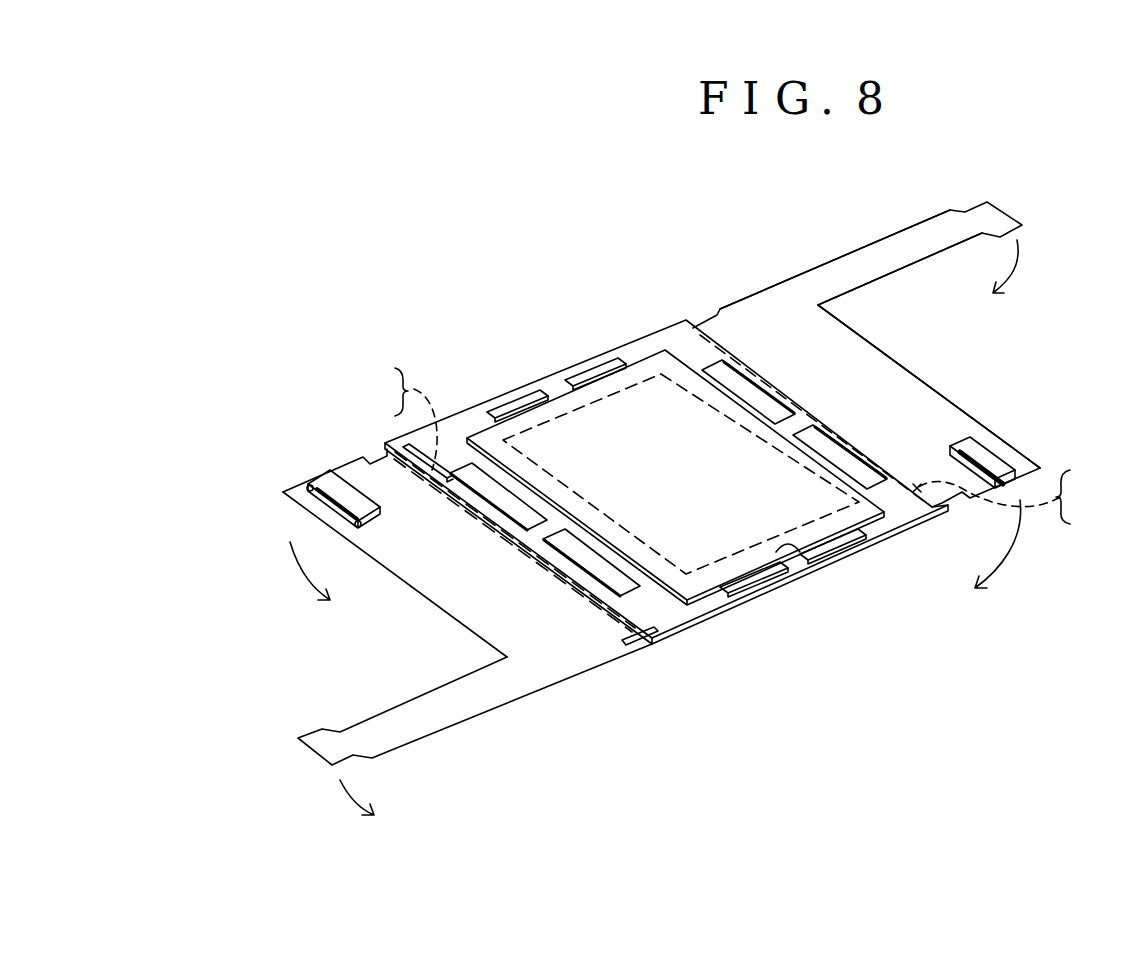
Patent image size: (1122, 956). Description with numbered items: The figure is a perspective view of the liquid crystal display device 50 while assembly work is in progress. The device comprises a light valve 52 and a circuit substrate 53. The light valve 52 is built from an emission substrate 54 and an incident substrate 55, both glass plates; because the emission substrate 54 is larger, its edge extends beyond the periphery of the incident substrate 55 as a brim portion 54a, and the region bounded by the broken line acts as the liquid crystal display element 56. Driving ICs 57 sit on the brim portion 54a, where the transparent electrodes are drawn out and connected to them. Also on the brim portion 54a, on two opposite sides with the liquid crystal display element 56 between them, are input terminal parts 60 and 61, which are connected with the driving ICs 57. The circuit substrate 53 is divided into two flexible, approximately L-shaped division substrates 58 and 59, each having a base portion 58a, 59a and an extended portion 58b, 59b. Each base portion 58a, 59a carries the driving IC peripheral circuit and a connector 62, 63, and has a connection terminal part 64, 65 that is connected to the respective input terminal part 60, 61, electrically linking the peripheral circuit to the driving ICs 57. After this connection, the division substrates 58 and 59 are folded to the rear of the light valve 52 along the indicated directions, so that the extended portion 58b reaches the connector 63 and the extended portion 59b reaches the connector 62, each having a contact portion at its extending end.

The liquid crystal display device 50 is at (268, 247).
The light valve 52 is at (661, 326).
The circuit substrate 53 is at (596, 476).
The emission substrate 54 is at (901, 524).
The brim portion 54a is at (460, 424).
The incident substrate 55 is at (800, 550).
The liquid crystal display element 56 is at (652, 408).
The driving ICs 57 is at (578, 372).
The division substrate 58 is at (868, 339).
The base portion 58a is at (855, 352).
The extended portion 58b is at (885, 262).
The division substrate 59 is at (401, 615).
The base portion 59a is at (487, 605).
The extended portion 59b is at (393, 733).
The input terminal part 60 is at (1007, 486).
The input terminal part 61 is at (400, 413).
The connector 62 is at (975, 447).
The connector 63 is at (335, 473).
The connection terminal part 64 is at (1079, 502).
The connection terminal part 65 is at (385, 398).